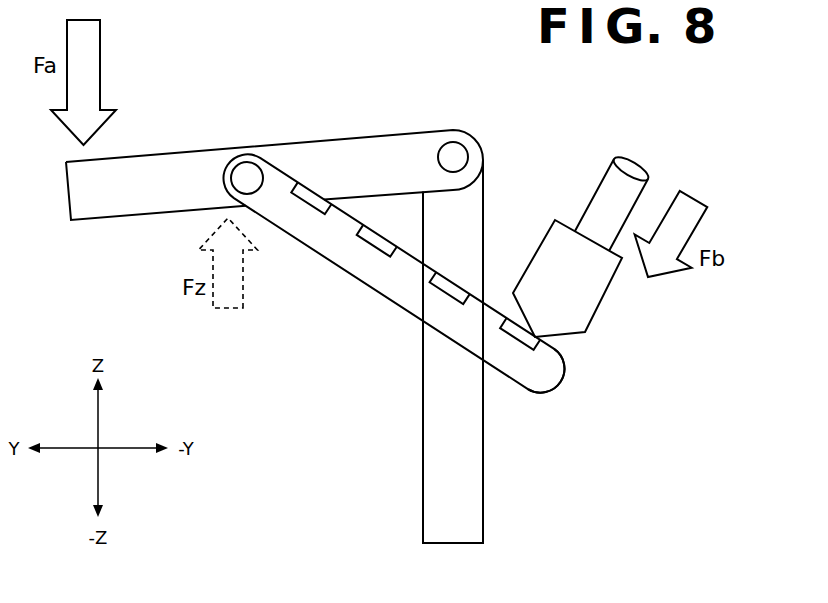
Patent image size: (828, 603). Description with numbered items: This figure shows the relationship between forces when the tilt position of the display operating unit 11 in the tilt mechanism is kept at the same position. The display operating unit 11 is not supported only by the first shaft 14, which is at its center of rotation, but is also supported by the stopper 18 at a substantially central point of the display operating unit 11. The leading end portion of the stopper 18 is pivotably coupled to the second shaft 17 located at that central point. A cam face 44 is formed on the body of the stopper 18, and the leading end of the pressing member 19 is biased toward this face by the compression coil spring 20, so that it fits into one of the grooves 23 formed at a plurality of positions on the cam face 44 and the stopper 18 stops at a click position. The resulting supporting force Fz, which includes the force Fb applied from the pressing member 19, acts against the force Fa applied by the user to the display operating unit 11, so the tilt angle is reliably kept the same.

The display operating unit 11 is at (357, 157).
The first shaft 14 is at (452, 157).
The second shaft 17 is at (245, 172).
The stopper 18 is at (316, 243).
The pressing member 19 is at (608, 295).
The compression coil spring 20 is at (637, 164).
The grooves 23 is at (378, 245).
The cam face 44 is at (563, 347).